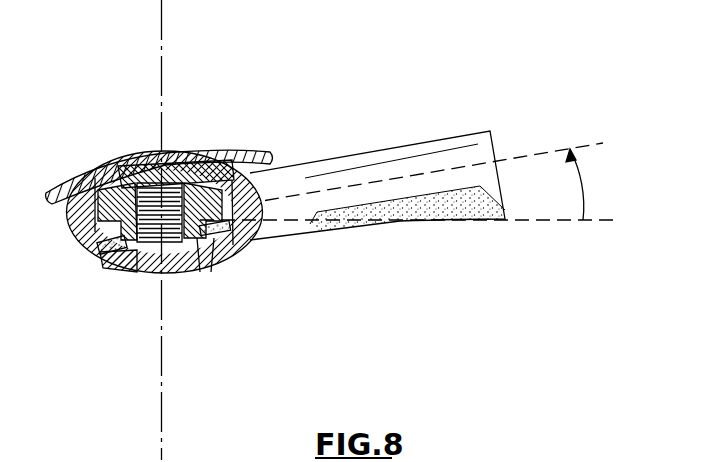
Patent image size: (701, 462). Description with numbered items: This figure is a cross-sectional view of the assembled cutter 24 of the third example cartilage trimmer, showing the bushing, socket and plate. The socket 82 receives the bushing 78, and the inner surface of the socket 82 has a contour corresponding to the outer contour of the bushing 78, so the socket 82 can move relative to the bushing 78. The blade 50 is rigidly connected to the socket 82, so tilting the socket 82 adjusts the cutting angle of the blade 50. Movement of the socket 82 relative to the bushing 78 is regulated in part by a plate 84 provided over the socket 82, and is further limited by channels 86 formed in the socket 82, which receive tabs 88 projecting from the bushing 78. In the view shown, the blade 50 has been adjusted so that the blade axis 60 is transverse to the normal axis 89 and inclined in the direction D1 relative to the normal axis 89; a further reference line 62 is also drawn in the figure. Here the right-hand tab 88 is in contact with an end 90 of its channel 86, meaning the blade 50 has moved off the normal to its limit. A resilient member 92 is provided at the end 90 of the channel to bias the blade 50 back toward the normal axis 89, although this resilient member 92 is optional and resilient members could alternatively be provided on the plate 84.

The cutter 24 is at (336, 116).
The blade 50 is at (428, 152).
The blade axis 60 is at (575, 150).
The vertical axis of clamp head 62 is at (162, 25).
The bushing 78 is at (124, 167).
The socket 82 is at (68, 244).
The plate 84 is at (211, 160).
The channels 86 is at (216, 152).
The tabs 88 is at (78, 176).
The normal axis 89 is at (577, 222).
The end of the channel 90 is at (118, 258).
The resilient member 92 is at (101, 254).
The direction D1 is at (585, 193).